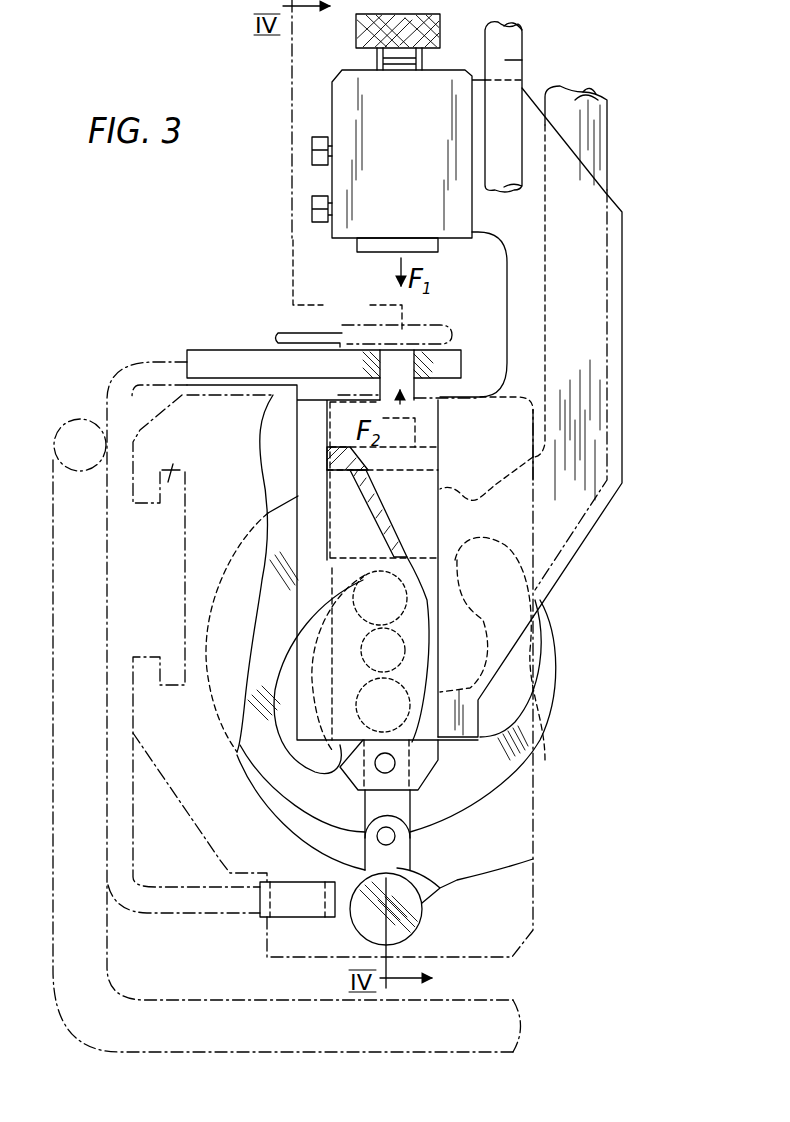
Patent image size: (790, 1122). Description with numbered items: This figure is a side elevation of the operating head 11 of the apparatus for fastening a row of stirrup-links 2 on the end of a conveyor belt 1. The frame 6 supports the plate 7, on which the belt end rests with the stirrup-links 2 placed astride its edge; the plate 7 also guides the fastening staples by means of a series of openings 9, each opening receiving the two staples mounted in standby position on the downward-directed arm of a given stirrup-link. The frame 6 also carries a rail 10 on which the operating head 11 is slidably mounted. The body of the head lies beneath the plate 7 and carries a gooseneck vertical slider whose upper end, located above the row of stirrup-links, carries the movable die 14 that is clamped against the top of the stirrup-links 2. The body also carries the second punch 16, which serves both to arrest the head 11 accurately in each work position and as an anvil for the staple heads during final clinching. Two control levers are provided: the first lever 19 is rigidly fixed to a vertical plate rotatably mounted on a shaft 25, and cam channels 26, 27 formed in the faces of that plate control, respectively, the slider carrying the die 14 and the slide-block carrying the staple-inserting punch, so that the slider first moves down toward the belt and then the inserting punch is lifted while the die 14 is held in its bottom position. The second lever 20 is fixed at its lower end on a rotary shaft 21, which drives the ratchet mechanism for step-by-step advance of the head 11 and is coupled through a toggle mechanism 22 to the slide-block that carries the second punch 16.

The conveyor belt 1 is at (280, 336).
The stirrup-links 2 is at (448, 331).
The frame 6 is at (155, 362).
The plate 7 is at (450, 367).
The openings 9 is at (404, 350).
The rail 10 is at (172, 470).
The operating head 11 is at (548, 64).
The movable die 14 is at (357, 251).
The second punch 16 is at (368, 365).
The first lever 19 is at (573, 107).
The second lever 20 is at (503, 63).
The rotary shaft 21 is at (400, 910).
The toggle mechanism 22 is at (396, 853).
The shaft 25 is at (387, 648).
The channel 26 is at (403, 688).
The channel 27 is at (237, 752).